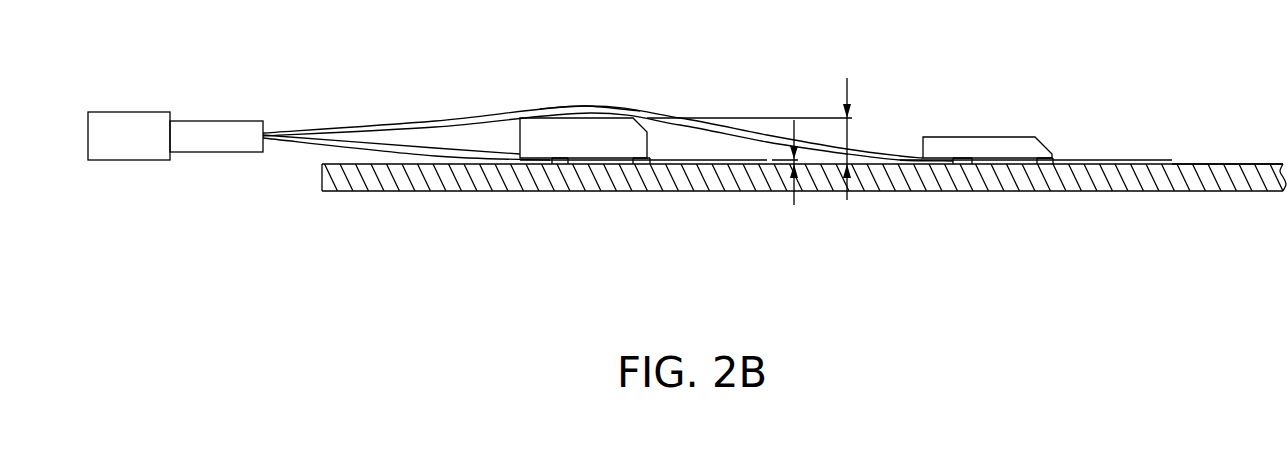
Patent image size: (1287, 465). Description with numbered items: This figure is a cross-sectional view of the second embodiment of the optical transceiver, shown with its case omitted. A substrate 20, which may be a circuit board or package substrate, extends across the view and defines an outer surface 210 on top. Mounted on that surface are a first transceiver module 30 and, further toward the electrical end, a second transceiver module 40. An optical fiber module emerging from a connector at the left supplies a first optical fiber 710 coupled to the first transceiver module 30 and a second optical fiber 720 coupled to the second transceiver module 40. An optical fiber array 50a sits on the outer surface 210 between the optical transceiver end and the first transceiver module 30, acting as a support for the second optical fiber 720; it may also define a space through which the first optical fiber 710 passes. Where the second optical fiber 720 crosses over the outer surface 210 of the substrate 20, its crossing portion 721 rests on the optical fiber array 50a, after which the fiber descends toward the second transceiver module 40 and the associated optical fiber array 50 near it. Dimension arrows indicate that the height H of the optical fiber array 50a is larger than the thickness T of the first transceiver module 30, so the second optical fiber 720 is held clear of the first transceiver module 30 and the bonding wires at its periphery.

The substrate 20 is at (1147, 193).
The outer surface 210 is at (1227, 163).
The first transceiver module 30 is at (718, 161).
The second transceiver module 40 is at (1123, 160).
The optical fiber array 50 is at (985, 148).
The optical fiber array 50a is at (593, 150).
The first optical fiber 710 is at (413, 146).
The second optical fiber 720 is at (462, 120).
The crossing portion 721 is at (587, 107).
The thickness T is at (793, 191).
The height H is at (751, 170).